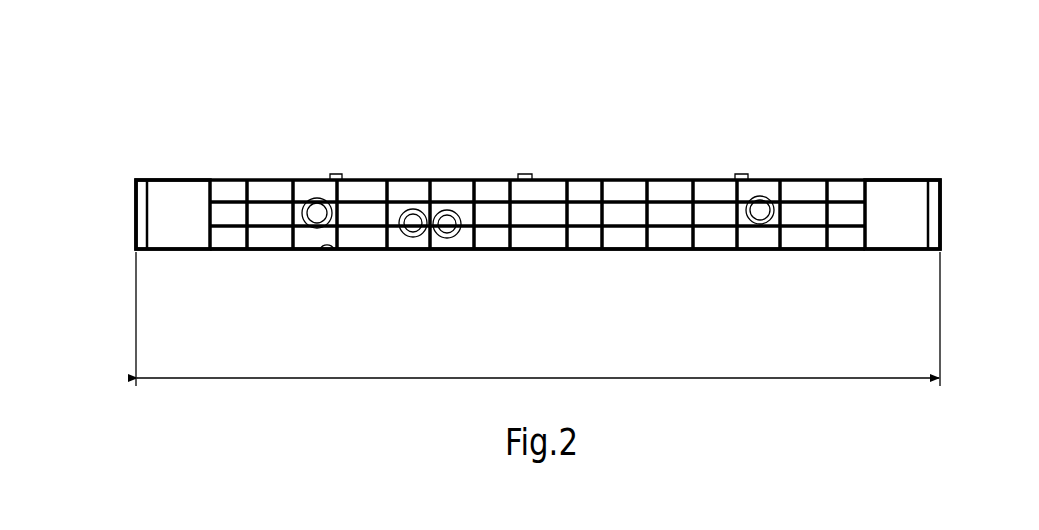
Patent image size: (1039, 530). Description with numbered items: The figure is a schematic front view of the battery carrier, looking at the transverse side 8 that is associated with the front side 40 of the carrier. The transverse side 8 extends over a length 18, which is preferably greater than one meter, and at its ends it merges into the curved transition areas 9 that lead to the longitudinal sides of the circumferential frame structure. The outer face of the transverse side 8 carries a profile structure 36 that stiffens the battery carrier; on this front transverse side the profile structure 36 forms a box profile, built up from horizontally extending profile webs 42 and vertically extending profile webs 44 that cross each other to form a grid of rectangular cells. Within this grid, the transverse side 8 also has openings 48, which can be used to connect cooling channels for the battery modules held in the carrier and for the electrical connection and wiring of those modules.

The transverse side 8 is at (792, 72).
The curved transition area 9 is at (136, 213).
The length of the transverse sides 18 is at (538, 319).
The profile structure 36 is at (626, 168).
The front side 40 is at (198, 132).
The horizontally extending profile web 42 is at (536, 251).
The vertically extending profile web 44 is at (323, 250).
The opening 48 is at (438, 208).